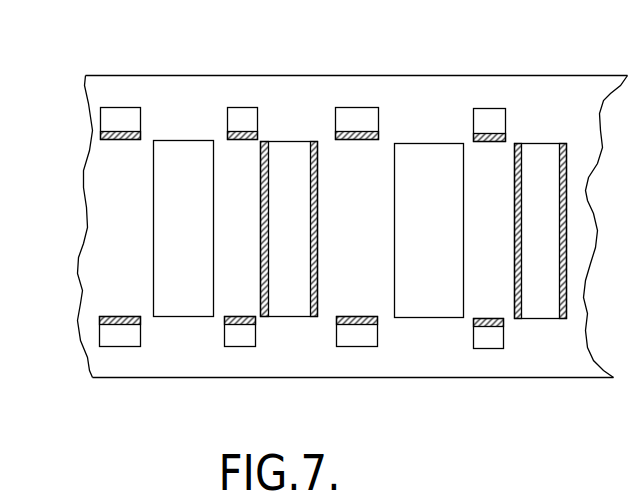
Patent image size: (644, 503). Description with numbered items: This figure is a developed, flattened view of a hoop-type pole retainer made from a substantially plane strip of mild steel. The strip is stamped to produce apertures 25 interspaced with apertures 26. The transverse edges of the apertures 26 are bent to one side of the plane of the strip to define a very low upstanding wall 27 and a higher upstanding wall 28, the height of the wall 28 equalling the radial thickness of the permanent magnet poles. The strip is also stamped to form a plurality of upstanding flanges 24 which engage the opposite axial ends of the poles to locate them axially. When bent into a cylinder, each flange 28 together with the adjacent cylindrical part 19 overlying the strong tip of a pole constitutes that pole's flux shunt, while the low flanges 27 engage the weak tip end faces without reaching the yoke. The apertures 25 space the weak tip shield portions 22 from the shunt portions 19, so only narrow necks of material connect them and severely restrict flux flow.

The shunt portion 19 is at (233, 253).
The weak tip shield portion 22 is at (103, 243).
The upstanding flange 24 is at (113, 133).
The aperture 25 is at (182, 172).
The aperture 26 is at (410, 167).
The very low upstanding wall 27 is at (317, 218).
The higher upstanding wall 28 is at (263, 218).